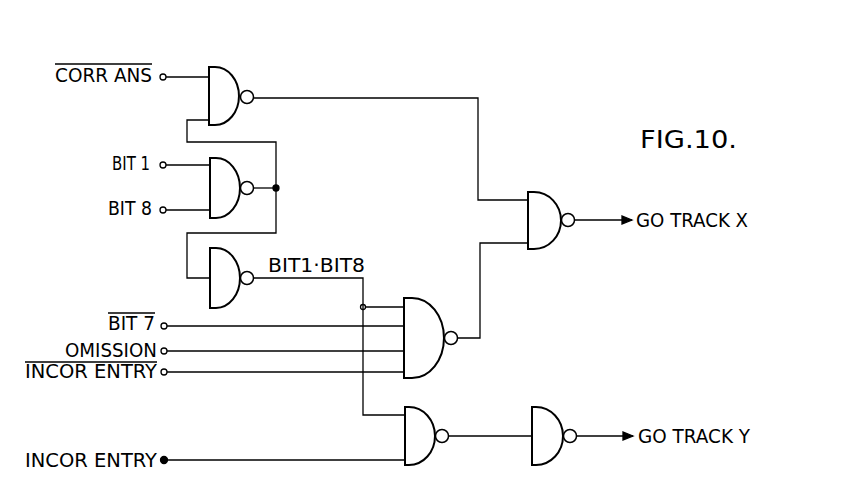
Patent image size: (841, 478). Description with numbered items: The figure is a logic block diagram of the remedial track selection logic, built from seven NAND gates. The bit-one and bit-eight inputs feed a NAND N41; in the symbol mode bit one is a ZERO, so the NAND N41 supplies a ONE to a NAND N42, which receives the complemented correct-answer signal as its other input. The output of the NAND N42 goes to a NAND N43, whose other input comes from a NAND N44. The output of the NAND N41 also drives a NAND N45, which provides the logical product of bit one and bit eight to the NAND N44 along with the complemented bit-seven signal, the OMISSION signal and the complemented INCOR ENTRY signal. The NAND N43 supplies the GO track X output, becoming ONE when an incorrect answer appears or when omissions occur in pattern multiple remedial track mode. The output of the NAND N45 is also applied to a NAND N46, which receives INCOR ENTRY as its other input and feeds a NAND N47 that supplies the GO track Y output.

The NAND N41 is at (243, 170).
The NAND N42 is at (228, 68).
The NAND N43 is at (551, 197).
The NAND N44 is at (441, 357).
The NAND N45 is at (227, 251).
The NAND N46 is at (428, 420).
The NAND N47 is at (546, 420).